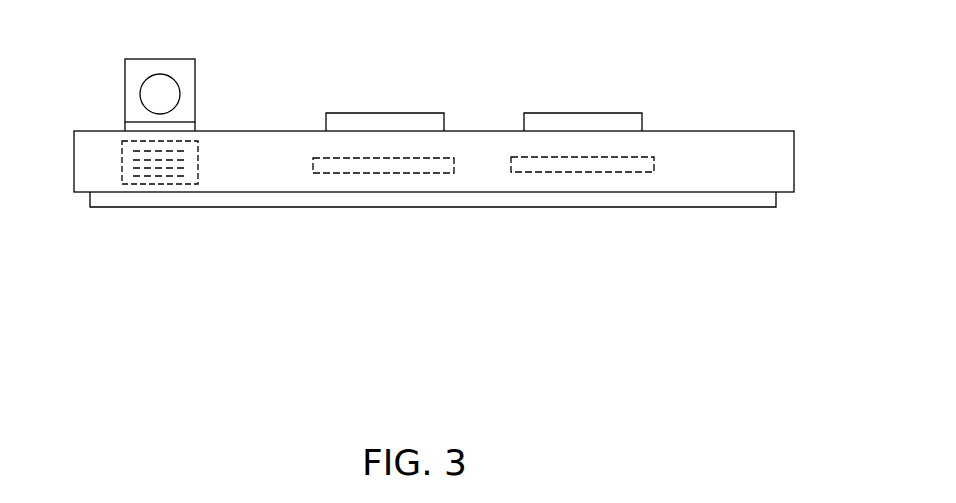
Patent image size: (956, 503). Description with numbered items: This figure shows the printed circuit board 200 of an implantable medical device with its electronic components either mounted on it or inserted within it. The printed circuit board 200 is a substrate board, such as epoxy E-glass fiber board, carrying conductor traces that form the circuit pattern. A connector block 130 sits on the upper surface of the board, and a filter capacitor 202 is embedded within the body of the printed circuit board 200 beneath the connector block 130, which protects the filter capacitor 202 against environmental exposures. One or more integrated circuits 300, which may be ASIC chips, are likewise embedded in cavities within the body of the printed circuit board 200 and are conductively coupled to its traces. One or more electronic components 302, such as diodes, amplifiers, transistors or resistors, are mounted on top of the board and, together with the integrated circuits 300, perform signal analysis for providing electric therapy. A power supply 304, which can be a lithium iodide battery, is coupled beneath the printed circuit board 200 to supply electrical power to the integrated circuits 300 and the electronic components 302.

The printed circuit board 200 is at (757, 127).
The connector block 130 is at (201, 70).
The filter capacitor 202 is at (110, 185).
The electronic components 302 is at (537, 113).
The integrated circuits 300 is at (535, 173).
The power supply 304 is at (708, 196).